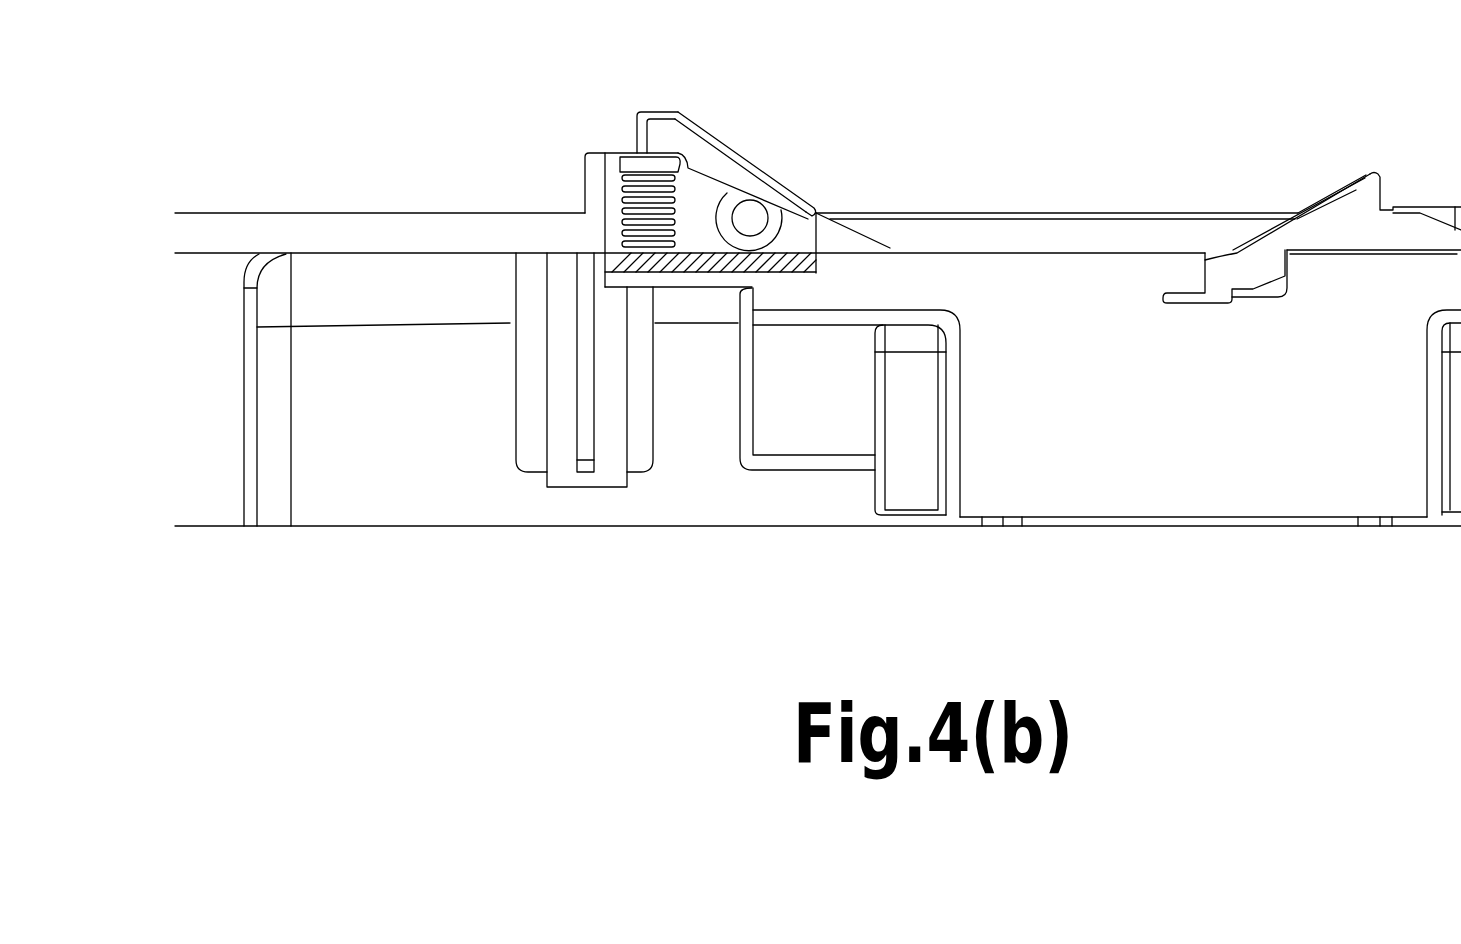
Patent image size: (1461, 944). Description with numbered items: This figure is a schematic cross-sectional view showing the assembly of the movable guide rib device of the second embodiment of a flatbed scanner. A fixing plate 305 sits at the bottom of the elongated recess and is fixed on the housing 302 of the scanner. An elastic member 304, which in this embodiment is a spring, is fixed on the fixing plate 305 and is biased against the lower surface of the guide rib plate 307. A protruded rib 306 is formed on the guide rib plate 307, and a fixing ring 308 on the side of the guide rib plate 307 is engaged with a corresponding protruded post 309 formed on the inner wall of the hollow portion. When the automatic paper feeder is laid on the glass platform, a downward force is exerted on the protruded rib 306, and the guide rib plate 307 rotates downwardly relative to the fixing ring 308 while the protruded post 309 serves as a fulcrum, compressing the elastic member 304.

The housing 302 is at (327, 228).
The elastic member 304 is at (675, 197).
The fixing plate 305 is at (648, 268).
The protruded rib 306 is at (662, 130).
The guide rib plate 307 is at (627, 185).
The fixing ring 308 is at (735, 232).
The protruded post 309 is at (748, 218).